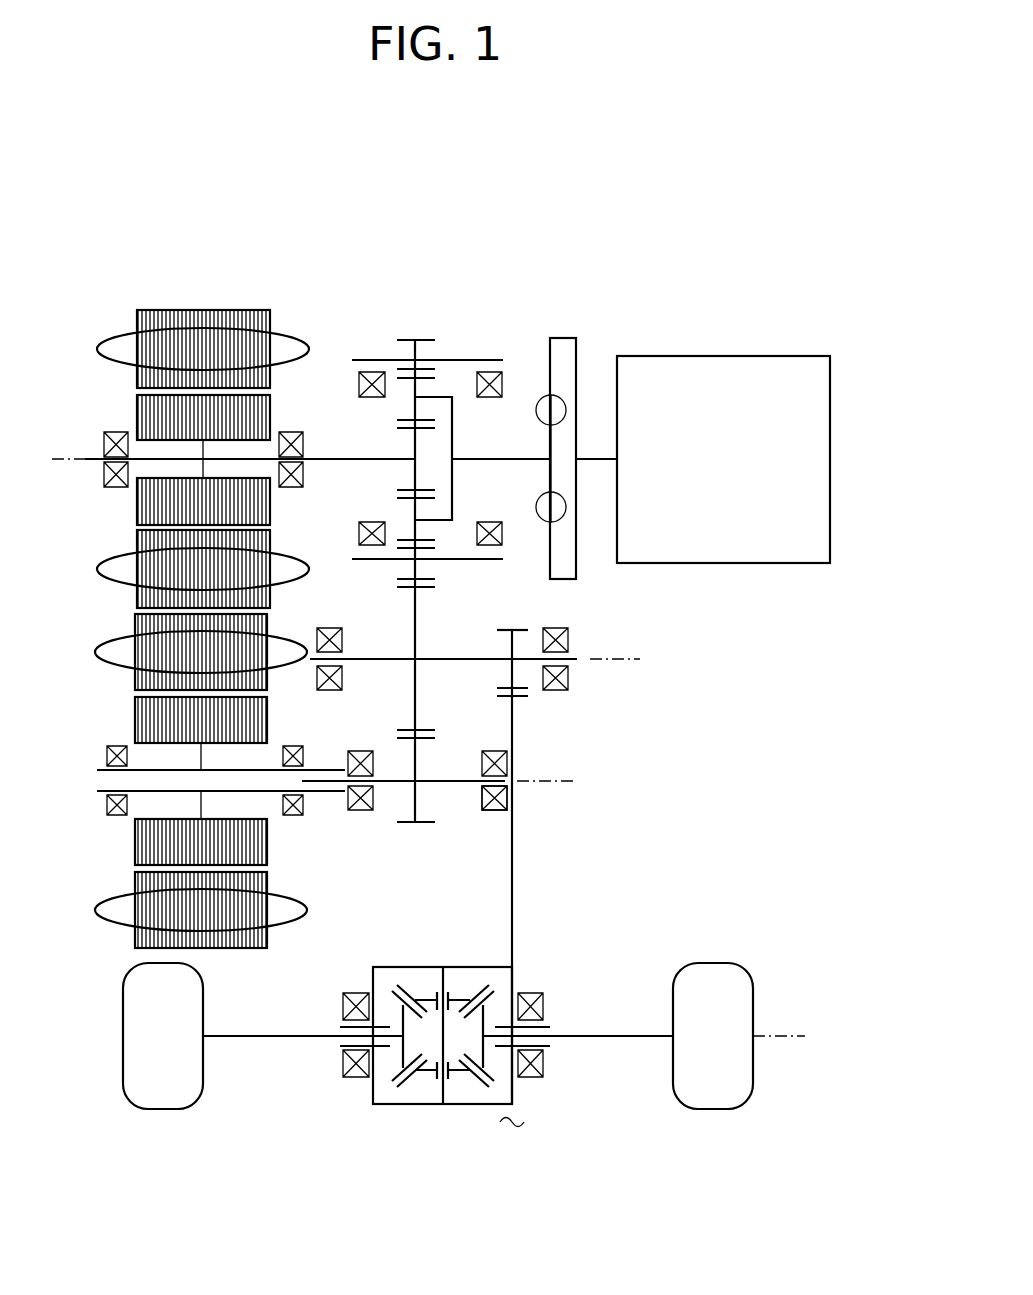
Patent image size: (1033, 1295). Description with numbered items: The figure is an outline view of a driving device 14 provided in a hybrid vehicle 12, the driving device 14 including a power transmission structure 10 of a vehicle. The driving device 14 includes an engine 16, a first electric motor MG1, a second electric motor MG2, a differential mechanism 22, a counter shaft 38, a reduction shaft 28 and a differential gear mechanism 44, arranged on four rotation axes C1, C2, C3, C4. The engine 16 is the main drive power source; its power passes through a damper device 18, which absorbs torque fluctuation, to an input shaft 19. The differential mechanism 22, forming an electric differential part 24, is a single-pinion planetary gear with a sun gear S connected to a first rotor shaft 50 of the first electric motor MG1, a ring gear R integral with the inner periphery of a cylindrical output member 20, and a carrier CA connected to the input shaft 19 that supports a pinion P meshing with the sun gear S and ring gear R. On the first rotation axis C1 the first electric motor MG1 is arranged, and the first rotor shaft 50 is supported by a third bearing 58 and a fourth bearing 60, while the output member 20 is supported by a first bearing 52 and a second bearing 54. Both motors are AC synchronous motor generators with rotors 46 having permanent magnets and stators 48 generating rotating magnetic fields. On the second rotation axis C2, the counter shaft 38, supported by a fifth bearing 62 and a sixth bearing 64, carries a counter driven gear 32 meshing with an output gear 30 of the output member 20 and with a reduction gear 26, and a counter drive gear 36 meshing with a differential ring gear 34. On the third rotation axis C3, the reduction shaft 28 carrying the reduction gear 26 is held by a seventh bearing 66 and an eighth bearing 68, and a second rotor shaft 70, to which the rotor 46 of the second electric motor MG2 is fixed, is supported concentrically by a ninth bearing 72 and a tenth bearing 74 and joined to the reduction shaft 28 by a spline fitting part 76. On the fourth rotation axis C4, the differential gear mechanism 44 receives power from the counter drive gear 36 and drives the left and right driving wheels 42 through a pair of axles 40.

The power transmission structure 10 is at (368, 880).
The hybrid vehicle 12 is at (694, 152).
The driving device 14 is at (260, 194).
The engine 16 is at (754, 362).
The damper device 18 is at (578, 354).
The input shaft 19 is at (488, 462).
The output member 20 is at (468, 352).
The differential mechanism 22 is at (360, 328).
The electric differential part 24 is at (445, 268).
The reduction gear 26 is at (430, 738).
The reduction shaft 28 is at (430, 785).
The output gear 30 is at (410, 340).
The counter driven gear 32 is at (404, 730).
The differential ring gear 34 is at (520, 696).
The counter drive gear 36 is at (500, 630).
The counter shaft 38 is at (393, 657).
The axles 40 is at (580, 1038).
The driving wheels 42 is at (160, 1094).
The differential gear mechanism 44 is at (374, 1118).
The rotor 46 is at (138, 405).
The stator 48 is at (244, 312).
The first rotor shaft 50 is at (318, 459).
The first bearing 52 is at (360, 528).
The second bearing 54 is at (542, 414).
The third bearing 58 is at (116, 490).
The fourth bearing 60 is at (290, 432).
The fifth bearing 62 is at (325, 628).
The sixth bearing 64 is at (560, 628).
The seventh bearing 66 is at (350, 752).
The eighth bearing 68 is at (497, 815).
The second rotor shaft 70 is at (257, 793).
The ninth bearing 72 is at (107, 805).
The tenth bearing 74 is at (292, 748).
The spline fitting part 76 is at (328, 806).
The first electric motor MG1 is at (158, 304).
The second electric motor MG2 is at (95, 690).
The first rotation axis C1 is at (82, 468).
The second rotation axis C2 is at (600, 664).
The third rotation axis C3 is at (556, 786).
The fourth rotation axis C4 is at (782, 1040).
The ring gear R is at (436, 372).
The carrier CA is at (452, 425).
The sun gear S is at (398, 492).
The pinion P is at (420, 536).